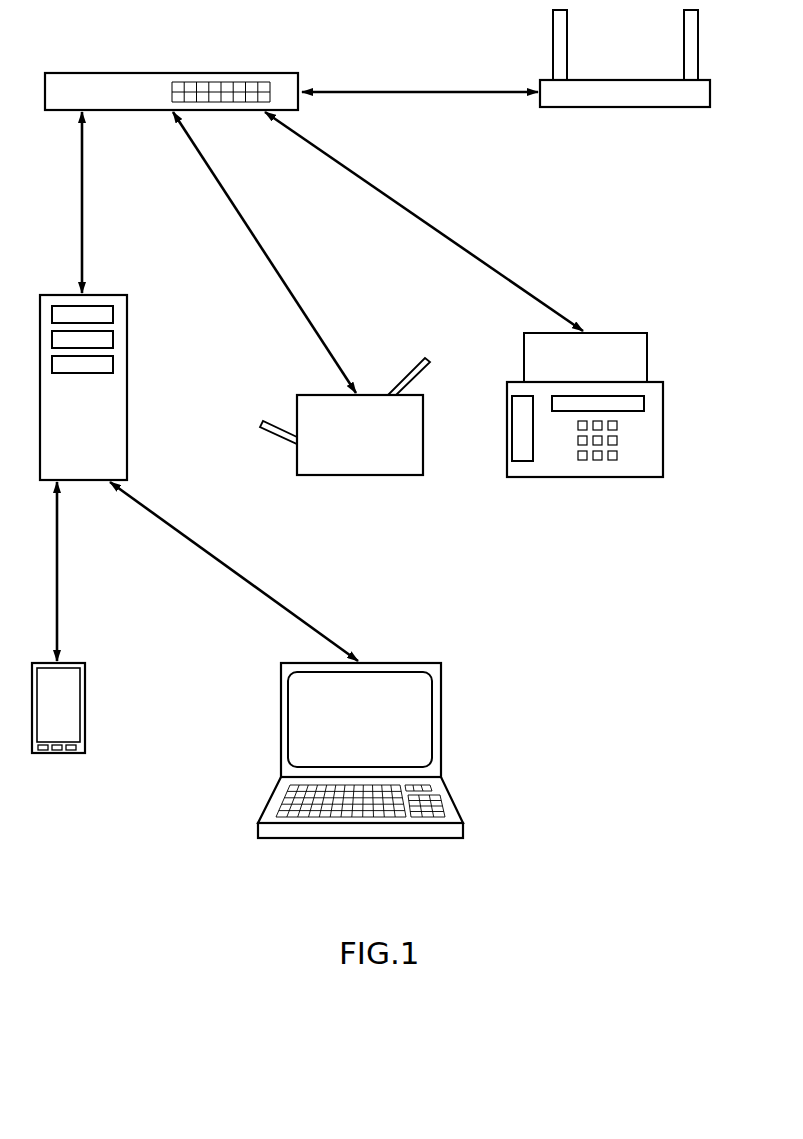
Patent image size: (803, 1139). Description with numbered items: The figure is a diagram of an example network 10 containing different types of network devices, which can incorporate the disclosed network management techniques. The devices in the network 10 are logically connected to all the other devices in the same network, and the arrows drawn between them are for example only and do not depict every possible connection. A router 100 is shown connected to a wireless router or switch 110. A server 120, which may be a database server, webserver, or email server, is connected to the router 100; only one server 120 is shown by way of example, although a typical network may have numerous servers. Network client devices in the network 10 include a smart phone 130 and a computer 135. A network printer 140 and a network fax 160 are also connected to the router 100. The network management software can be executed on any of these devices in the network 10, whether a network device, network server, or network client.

The network 10 is at (626, 660).
The router 100 is at (170, 73).
The wireless router or switch 110 is at (640, 107).
The server 120 is at (127, 365).
The smart phone 130 is at (85, 708).
The computer 135 is at (441, 735).
The network printer 140 is at (358, 475).
The network fax 160 is at (663, 428).